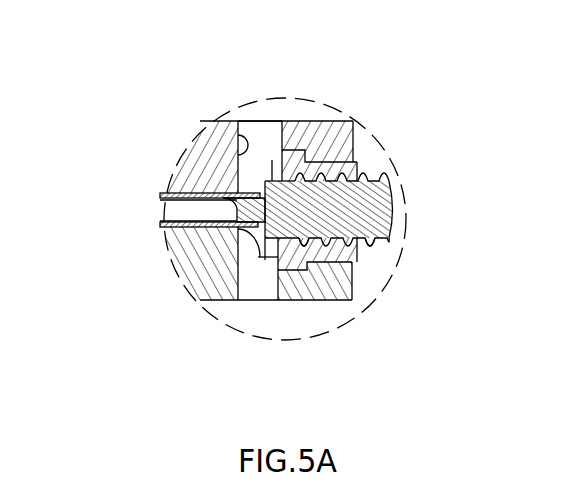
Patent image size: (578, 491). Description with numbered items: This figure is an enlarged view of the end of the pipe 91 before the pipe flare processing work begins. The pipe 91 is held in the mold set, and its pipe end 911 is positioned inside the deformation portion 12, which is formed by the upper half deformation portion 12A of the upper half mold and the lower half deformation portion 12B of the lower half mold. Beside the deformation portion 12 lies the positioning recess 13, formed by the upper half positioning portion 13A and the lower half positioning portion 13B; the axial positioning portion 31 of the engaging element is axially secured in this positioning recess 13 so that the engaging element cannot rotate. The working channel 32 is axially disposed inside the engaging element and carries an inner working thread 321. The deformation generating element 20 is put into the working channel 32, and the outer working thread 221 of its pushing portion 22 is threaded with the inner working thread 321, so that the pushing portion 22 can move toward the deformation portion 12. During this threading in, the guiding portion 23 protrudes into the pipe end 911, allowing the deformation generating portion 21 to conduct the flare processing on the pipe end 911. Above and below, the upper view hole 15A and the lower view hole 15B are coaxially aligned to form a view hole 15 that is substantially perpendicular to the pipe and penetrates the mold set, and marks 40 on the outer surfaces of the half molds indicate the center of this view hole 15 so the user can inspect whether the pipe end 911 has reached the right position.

The deformation portion 12 is at (150, 260).
The upper half deformation portion 12A is at (238, 225).
The lower half deformation portion 12B is at (243, 233).
The positioning recess 13 is at (400, 146).
The upper half positioning portion 13A is at (340, 150).
The lower half positioning portion 13B is at (345, 190).
The view hole 15 is at (153, 122).
The upper view hole 15A is at (240, 122).
The lower view hole 15B is at (267, 200).
The deformation generating element 20 is at (282, 255).
The deformation generating portion 21 is at (258, 240).
The pushing portion 22 is at (283, 242).
The outer working thread 221 is at (302, 245).
The guiding portion 23 is at (237, 232).
The axial positioning portion 31 is at (272, 182).
The working channel 32 is at (386, 249).
The inner working thread 321 is at (396, 300).
The marks 40 is at (262, 119).
The pipe 91 is at (236, 195).
The pipe end 911 is at (266, 197).